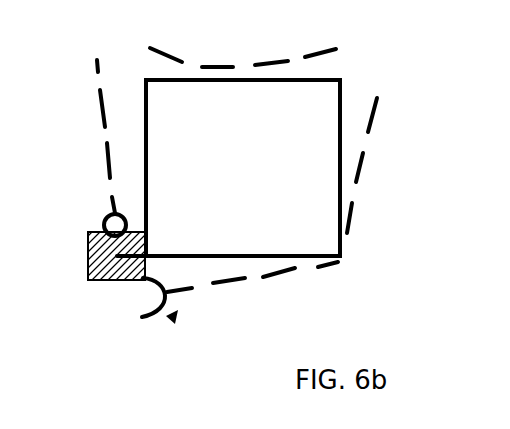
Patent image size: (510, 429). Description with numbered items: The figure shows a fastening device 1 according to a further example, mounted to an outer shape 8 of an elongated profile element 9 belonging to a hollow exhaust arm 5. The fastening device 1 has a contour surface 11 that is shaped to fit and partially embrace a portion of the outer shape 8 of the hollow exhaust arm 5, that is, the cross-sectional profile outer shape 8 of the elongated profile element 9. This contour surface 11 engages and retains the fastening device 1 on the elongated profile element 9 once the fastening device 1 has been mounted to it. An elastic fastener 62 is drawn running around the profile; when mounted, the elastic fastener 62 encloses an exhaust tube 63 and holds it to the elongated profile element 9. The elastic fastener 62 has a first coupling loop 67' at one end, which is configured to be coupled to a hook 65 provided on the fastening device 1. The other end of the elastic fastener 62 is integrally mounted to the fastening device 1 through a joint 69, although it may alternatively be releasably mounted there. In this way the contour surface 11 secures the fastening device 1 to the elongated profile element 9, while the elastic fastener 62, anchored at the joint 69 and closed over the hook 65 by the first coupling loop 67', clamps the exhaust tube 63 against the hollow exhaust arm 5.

The fastening device 1 is at (72, 243).
The hollow exhaust arm 5 is at (302, 266).
The outer shape 8 is at (145, 270).
The elongated profile element 9 is at (233, 226).
The contour surface 11 is at (132, 256).
The elastic fastener 62 is at (362, 160).
The exhaust tube 63 is at (333, 51).
The hook 65 is at (157, 299).
The first coupling loop 67' is at (137, 331).
The joint 69 is at (100, 208).